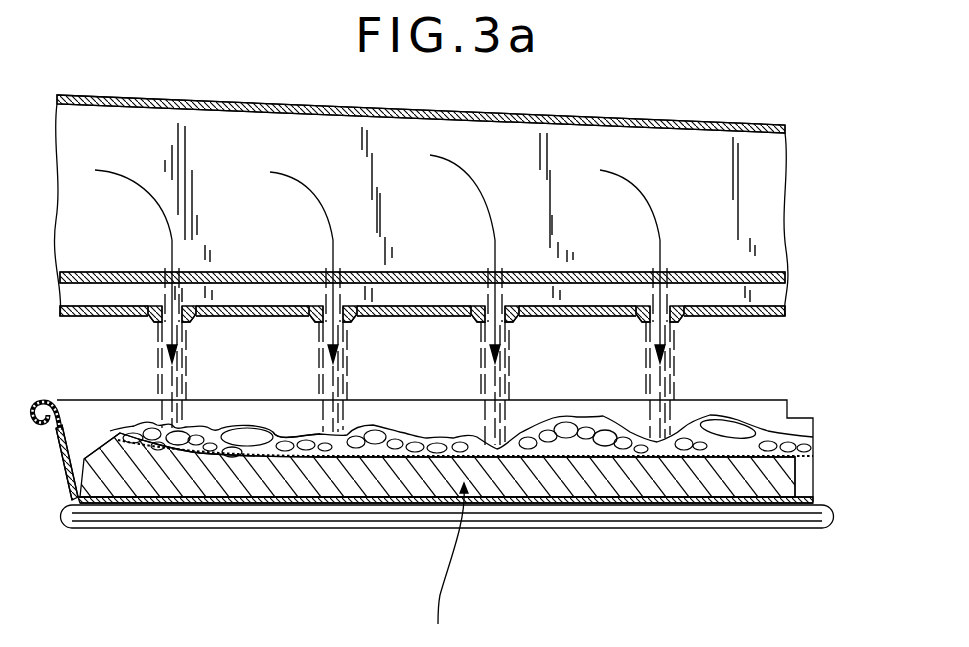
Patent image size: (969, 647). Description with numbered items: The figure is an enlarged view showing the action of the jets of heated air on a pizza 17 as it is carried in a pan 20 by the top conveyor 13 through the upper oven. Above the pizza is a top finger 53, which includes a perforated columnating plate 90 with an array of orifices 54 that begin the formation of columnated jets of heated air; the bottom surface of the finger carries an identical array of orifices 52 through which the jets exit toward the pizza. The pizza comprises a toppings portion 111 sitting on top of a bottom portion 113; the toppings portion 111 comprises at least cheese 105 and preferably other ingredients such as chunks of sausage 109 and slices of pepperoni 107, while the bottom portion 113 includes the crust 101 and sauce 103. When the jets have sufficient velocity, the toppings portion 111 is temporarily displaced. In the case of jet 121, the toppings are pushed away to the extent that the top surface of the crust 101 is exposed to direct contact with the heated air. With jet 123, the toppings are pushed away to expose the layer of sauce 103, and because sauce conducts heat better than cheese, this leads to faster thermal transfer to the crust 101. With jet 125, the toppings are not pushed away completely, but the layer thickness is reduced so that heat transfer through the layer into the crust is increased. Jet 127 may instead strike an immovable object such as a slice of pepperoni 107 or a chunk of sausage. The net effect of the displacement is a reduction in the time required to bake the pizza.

The top finger 53 is at (296, 100).
The orifices 54 is at (328, 266).
The columnating plate 90 is at (440, 272).
The orifices 52 is at (311, 324).
The pan 20 is at (62, 462).
The jet 127 is at (166, 380).
The jet 123 is at (338, 378).
The jet 121 is at (501, 388).
The jet 125 is at (673, 374).
The crust 101 is at (80, 493).
The bottom portion 113 is at (808, 456).
The pizza 17 is at (449, 565).
The toppings portion 111 is at (808, 418).
The cheese 105 is at (285, 432).
The slices of pepperoni 107 is at (732, 426).
The chunks of sausage 109 is at (176, 443).
The sauce 103 is at (230, 462).
The top conveyor 13 is at (123, 512).